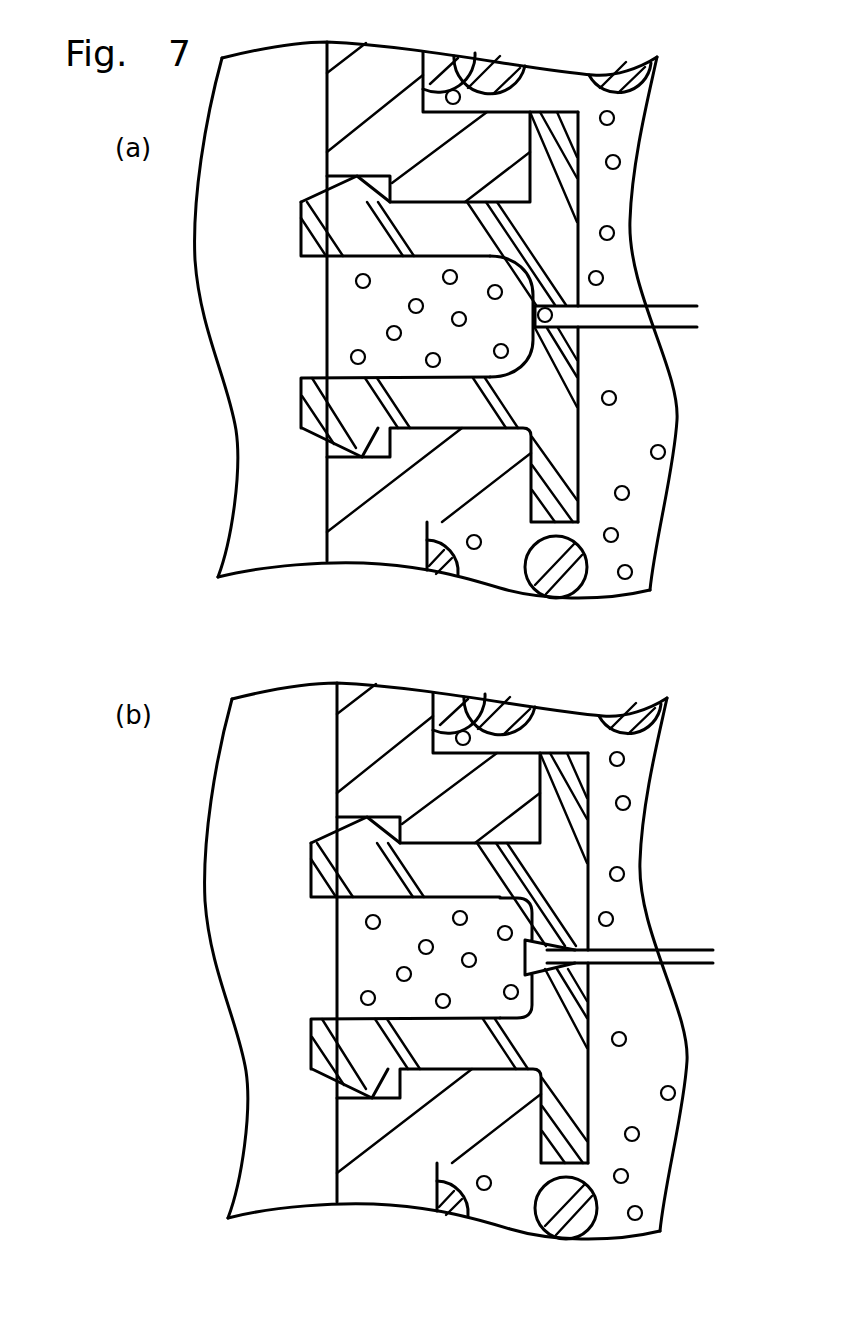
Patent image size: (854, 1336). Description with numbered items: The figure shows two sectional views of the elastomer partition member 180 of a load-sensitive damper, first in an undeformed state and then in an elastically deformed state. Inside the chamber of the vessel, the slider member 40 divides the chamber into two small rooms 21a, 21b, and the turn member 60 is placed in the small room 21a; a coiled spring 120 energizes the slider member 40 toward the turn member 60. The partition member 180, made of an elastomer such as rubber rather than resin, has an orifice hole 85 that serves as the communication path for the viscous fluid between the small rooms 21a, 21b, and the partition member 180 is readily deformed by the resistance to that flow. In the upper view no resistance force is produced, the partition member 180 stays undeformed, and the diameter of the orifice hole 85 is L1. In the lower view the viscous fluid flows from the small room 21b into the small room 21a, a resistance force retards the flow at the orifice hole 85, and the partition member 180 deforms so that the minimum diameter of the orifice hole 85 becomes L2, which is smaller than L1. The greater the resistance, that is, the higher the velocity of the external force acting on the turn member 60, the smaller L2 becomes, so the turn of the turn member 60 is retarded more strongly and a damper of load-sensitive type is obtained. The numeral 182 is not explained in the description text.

The turn member 60 is at (354, 538).
The slider member 40 is at (363, 1180).
The thin wall 182 is at (558, 120).
The partition member 180 is at (592, 515).
The coiled spring 120 is at (513, 715).
The small room 21a is at (412, 365).
The small room 21b is at (676, 425).
The orifice hole 85 is at (581, 322).
The diameter of the orifice hole L1 is at (688, 280).
The minimum diameter of the orifice hole L2 is at (698, 923).